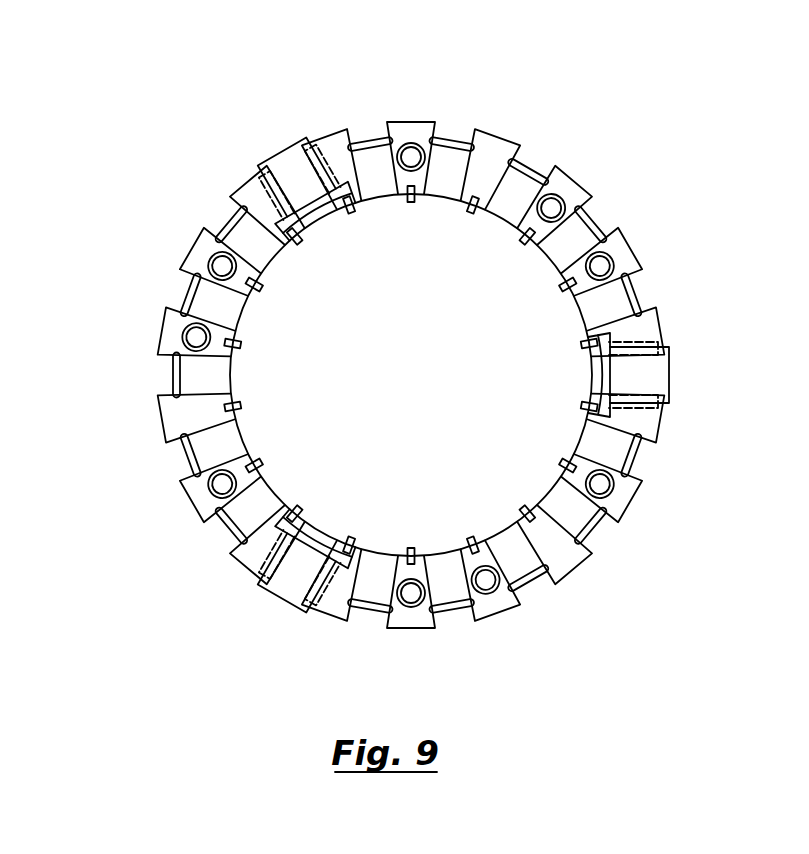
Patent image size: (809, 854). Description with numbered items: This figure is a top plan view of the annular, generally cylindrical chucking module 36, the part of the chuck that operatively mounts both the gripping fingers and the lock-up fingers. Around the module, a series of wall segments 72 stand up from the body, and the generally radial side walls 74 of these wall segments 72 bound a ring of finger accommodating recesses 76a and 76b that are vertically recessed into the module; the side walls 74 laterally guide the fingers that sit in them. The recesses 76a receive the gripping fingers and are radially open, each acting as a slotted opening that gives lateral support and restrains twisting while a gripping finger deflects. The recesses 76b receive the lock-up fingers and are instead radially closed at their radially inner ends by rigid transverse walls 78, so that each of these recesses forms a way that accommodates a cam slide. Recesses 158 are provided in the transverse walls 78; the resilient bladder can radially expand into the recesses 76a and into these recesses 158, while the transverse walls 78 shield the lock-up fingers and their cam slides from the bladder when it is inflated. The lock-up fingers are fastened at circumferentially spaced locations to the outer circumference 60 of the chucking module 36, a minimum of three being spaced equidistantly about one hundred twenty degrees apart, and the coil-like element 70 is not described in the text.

The chucking module 36 is at (522, 118).
The outer circumference 60 is at (332, 134).
The coil winding 70 is at (277, 194).
The wall segments 72 is at (324, 135).
The radial side walls 74 is at (388, 136).
The finger accommodating recesses 76a is at (376, 178).
The finger accommodating recesses 76b is at (313, 205).
The transverse walls 78 is at (278, 171).
The recesses 158 is at (411, 198).